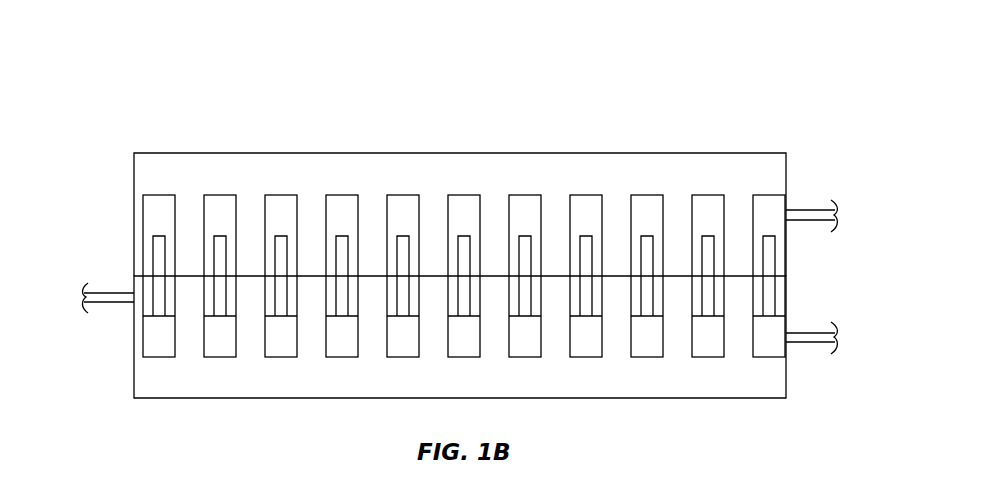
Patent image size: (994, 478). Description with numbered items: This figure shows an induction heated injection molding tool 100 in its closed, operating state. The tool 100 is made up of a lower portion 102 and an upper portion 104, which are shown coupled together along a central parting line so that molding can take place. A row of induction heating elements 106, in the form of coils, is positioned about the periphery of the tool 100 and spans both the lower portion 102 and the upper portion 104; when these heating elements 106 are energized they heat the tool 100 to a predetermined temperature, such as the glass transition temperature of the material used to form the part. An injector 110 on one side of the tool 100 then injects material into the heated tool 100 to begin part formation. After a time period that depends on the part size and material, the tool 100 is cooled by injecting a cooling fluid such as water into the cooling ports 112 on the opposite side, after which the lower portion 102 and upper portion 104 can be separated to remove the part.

The tool 100 is at (137, 98).
The lower portion 102 is at (786, 385).
The upper portion 104 is at (786, 175).
The induction heating elements 106 is at (160, 215).
The injector 110 is at (108, 292).
The cooling ports 112 is at (795, 222).